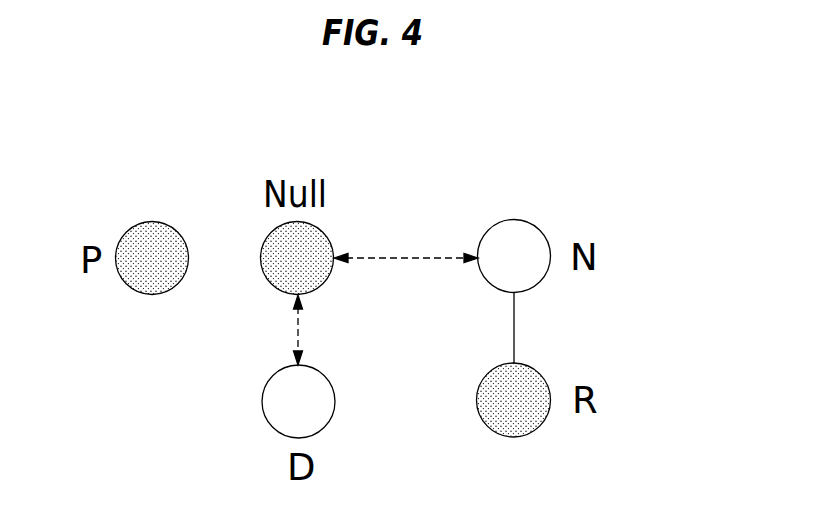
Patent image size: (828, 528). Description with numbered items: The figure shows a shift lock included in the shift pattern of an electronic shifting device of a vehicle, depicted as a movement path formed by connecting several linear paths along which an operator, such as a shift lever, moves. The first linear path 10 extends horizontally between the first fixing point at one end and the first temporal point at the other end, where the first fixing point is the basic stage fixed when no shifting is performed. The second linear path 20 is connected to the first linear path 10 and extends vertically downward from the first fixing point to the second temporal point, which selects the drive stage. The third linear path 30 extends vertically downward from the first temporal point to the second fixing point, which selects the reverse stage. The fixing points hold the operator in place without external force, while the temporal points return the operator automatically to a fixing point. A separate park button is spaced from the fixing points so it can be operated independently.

The first linear path 10 is at (405, 257).
The second linear path 20 is at (297, 330).
The third linear path 30 is at (514, 327).